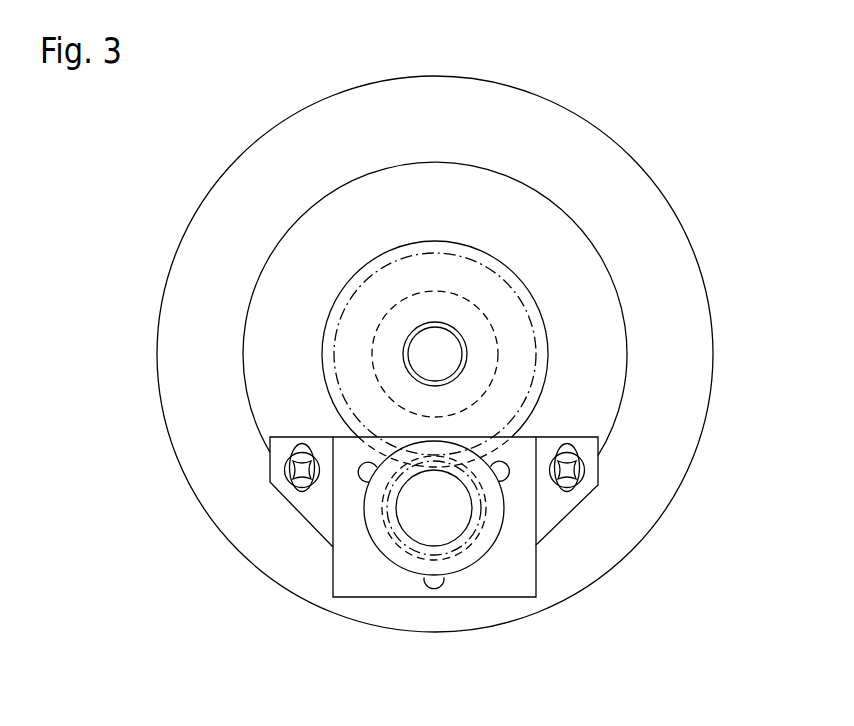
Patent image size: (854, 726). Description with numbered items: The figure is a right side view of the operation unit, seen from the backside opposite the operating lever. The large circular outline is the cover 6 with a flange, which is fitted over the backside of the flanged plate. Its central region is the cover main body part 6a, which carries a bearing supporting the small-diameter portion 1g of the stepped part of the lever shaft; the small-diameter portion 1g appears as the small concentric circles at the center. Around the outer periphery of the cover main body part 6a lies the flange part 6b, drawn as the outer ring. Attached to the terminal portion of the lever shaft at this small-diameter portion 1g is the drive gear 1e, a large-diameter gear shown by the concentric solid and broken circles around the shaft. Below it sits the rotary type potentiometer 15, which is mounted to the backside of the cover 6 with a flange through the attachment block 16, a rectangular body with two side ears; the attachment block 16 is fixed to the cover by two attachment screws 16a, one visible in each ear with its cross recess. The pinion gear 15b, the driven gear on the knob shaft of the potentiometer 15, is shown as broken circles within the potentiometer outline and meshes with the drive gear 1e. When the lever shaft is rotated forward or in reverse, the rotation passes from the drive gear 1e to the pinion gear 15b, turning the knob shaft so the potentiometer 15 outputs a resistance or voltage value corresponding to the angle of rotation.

The cover with a flange 6 is at (620, 282).
The cover main body part 6a is at (533, 208).
The flange part 6b is at (635, 207).
The drive gear 1e is at (382, 255).
The small-diameter portion 1g is at (402, 352).
The rotary type potentiometer 15 is at (460, 558).
The pinion gear 15b is at (397, 541).
The attachment block 16 is at (513, 583).
The attachment screw 16a is at (302, 478).